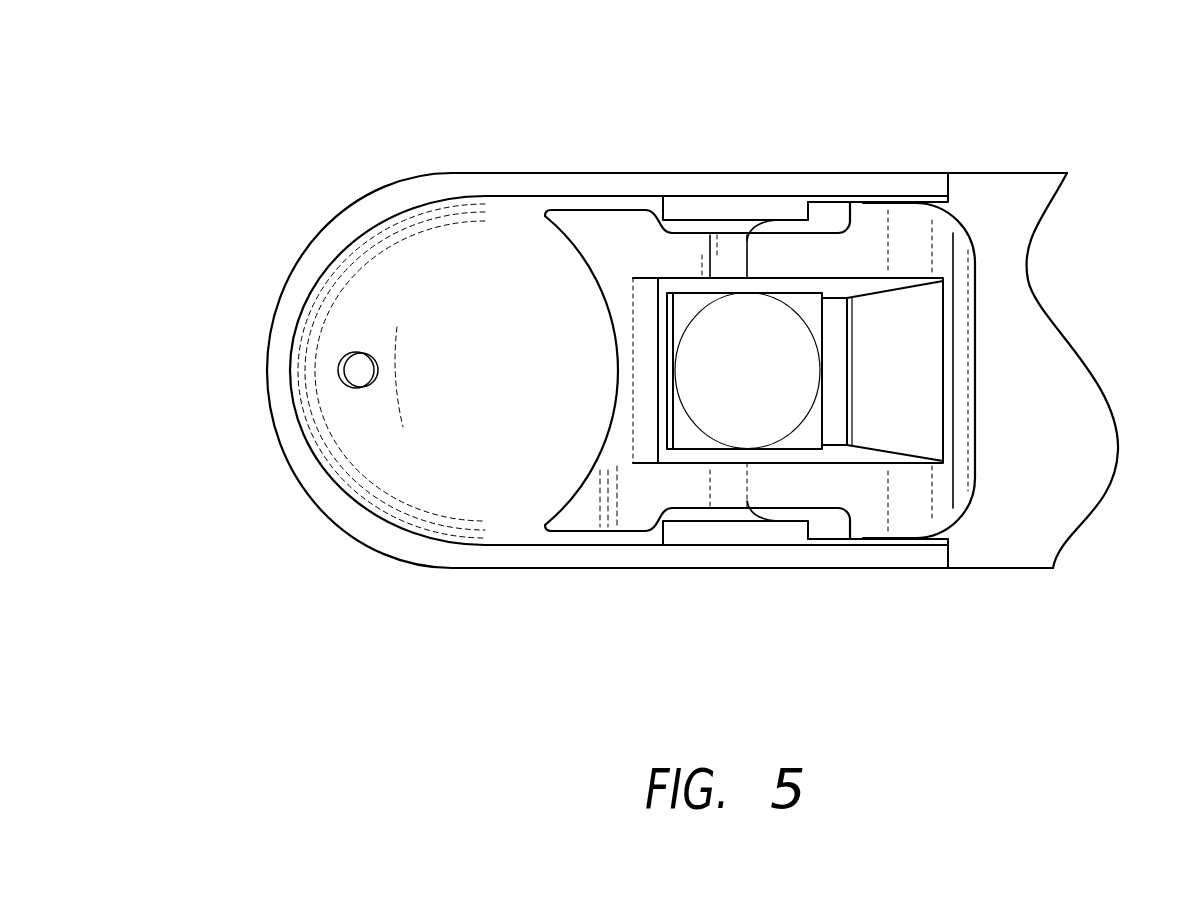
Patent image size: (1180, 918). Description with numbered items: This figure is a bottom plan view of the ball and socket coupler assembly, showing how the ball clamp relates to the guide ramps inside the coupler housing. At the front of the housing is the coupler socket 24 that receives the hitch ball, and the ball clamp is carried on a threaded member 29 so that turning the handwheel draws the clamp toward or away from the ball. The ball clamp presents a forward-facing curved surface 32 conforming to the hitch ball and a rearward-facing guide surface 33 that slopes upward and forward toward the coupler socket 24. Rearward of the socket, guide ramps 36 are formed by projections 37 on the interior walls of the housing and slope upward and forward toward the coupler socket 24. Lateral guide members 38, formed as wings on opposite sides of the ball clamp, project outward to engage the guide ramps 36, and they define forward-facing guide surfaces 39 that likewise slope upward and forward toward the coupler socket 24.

The coupler socket 24 is at (296, 305).
The threaded member 29 is at (827, 407).
The forward-facing curved surface 32 is at (580, 265).
The rearward-facing guide surface 33 is at (977, 302).
The guide ramps 36 is at (822, 200).
The projections 37 is at (715, 213).
The lateral guide members 38 is at (863, 220).
The forward-facing guide surfaces 39 is at (832, 215).